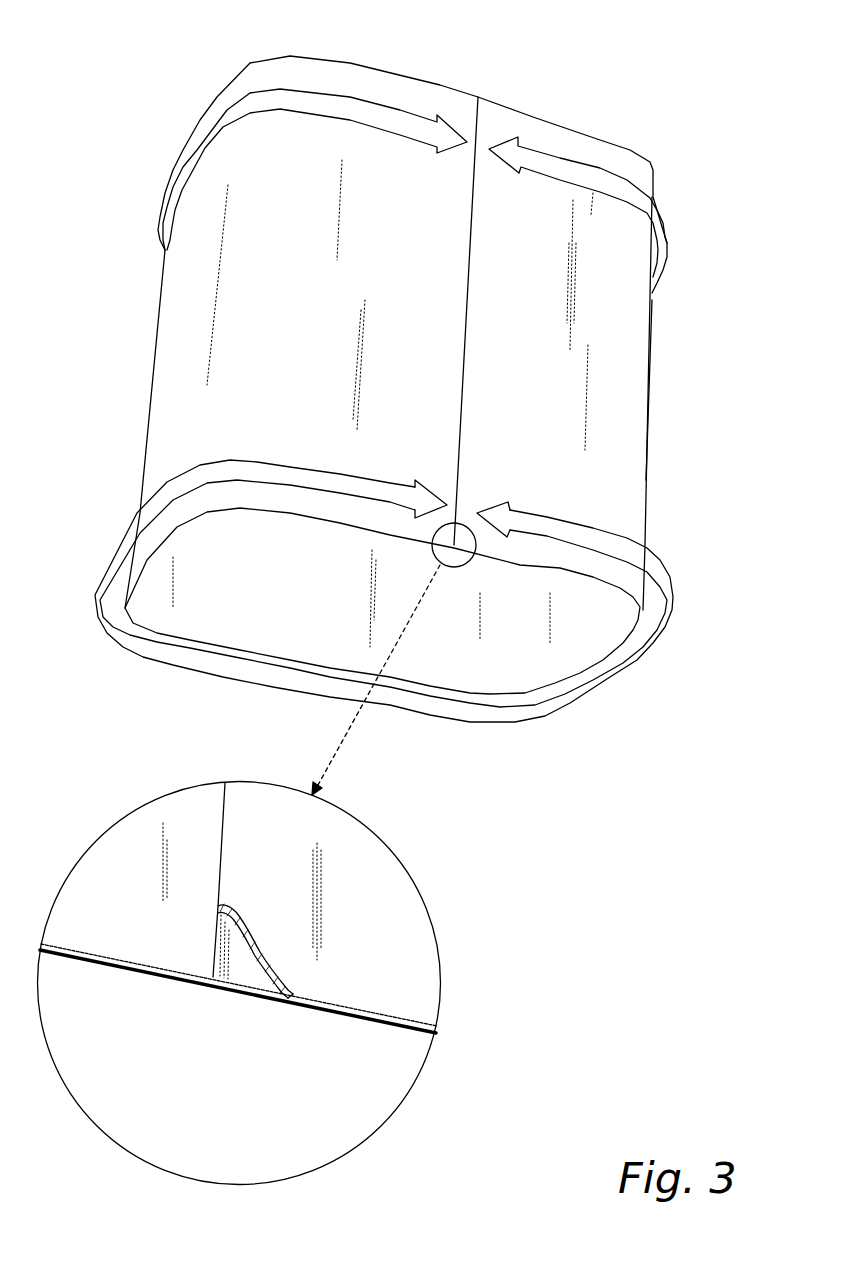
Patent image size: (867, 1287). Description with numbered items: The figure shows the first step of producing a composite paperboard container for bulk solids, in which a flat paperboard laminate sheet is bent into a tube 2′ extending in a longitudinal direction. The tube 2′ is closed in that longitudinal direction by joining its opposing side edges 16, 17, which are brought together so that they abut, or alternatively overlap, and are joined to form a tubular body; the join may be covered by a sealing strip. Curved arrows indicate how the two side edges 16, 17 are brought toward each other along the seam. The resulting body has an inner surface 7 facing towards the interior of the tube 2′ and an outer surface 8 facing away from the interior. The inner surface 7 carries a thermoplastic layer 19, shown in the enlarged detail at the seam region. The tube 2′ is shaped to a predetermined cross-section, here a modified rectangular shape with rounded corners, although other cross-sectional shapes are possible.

The tube 2′ is at (620, 360).
The inner surface 7 is at (547, 642).
The outer surface 8 is at (617, 475).
The side edge 16 is at (466, 156).
The side edge 17 is at (486, 186).
The thermoplastic layer 19 is at (248, 978).